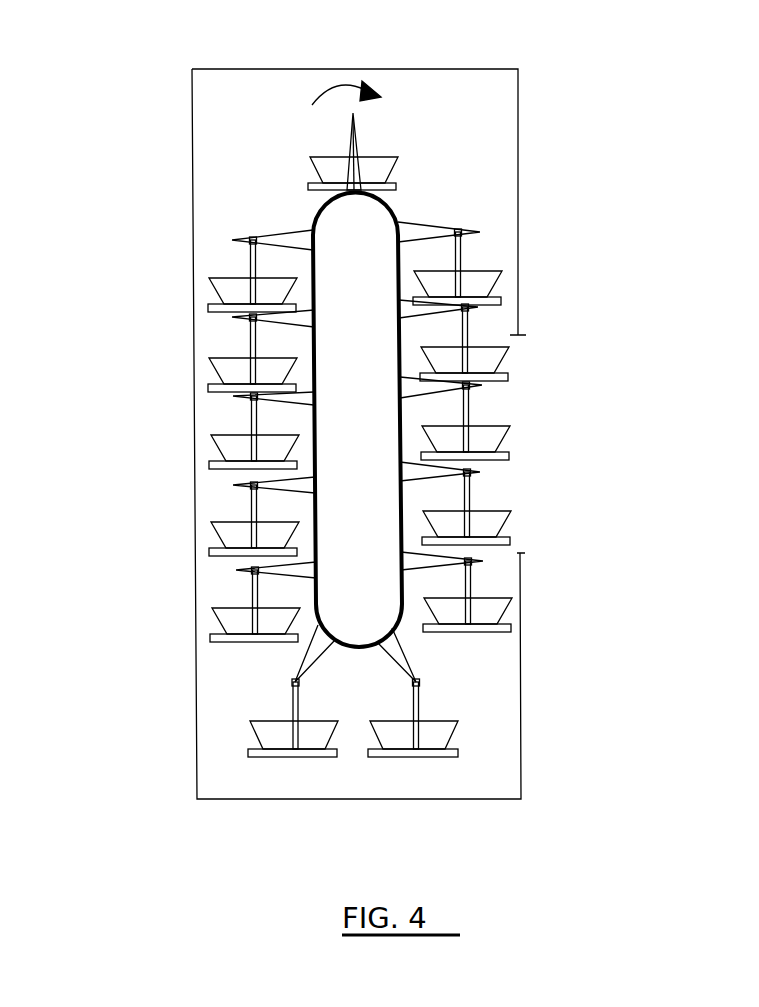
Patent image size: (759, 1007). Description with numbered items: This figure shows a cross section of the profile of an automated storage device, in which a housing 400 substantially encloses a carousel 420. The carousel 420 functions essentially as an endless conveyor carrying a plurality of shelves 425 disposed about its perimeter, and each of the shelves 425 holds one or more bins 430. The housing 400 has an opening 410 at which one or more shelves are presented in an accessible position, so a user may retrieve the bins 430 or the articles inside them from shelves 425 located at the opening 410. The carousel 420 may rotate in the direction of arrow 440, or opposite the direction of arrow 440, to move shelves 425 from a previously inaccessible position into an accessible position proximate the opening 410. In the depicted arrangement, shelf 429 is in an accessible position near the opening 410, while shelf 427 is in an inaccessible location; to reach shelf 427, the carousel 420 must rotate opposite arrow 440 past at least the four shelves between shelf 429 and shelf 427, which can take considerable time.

The automated storage device housing 400 is at (191, 155).
The opening 410 is at (353, 430).
The carousel 420 is at (310, 212).
The shelves 425 is at (212, 385).
The shelf 427 is at (212, 553).
The shelf 429 is at (500, 542).
The bins 430 is at (487, 277).
The arrow 440 is at (320, 90).